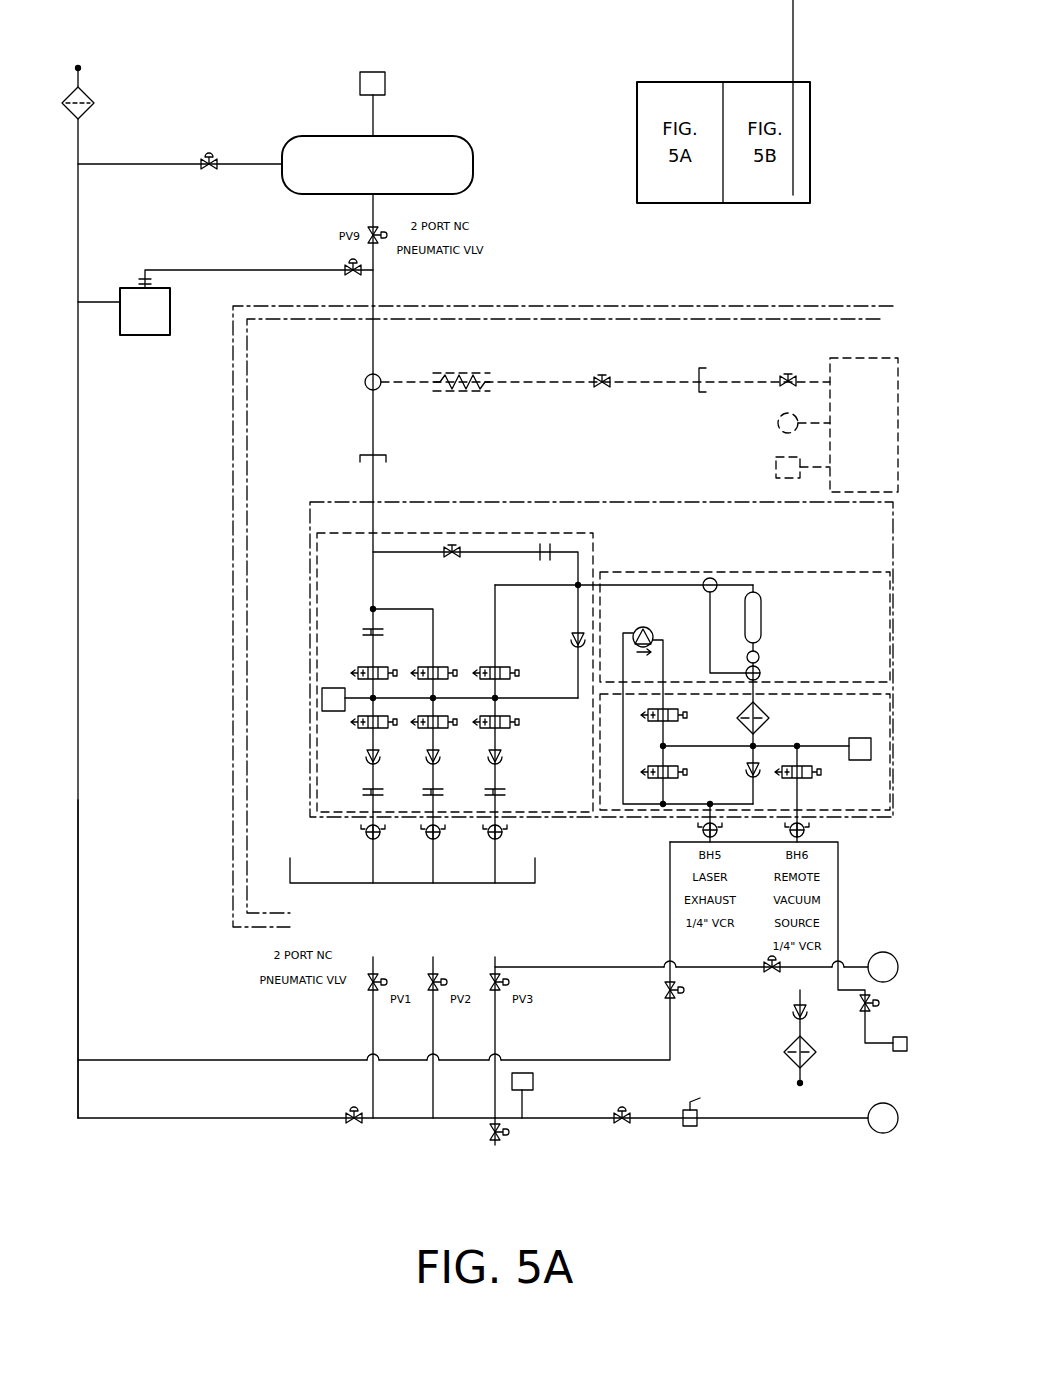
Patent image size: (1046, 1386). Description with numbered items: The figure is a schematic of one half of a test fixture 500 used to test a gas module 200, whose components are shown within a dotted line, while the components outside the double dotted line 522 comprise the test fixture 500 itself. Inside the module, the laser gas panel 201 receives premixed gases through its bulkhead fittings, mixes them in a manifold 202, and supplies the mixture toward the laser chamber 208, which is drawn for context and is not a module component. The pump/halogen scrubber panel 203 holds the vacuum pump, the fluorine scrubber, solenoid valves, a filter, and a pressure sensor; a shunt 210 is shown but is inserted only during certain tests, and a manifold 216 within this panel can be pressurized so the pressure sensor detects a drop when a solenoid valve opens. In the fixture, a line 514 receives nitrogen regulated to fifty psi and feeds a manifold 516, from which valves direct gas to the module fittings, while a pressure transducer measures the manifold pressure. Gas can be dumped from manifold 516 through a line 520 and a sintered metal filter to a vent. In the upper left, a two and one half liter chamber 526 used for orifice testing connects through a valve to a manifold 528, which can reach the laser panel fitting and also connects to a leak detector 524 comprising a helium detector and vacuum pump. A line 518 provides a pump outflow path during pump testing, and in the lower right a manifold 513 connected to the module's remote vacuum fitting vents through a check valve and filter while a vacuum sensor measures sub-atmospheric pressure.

The test fixture 500 is at (278, 1152).
The manifold 513 is at (848, 988).
The line 514 is at (650, 1118).
The manifold 516 is at (405, 1118).
The line 518 is at (175, 1060).
The line 520 is at (78, 929).
The double dotted line 522 is at (233, 583).
The leak detector 524 is at (123, 288).
The chamber 526 is at (473, 150).
The manifold 528 is at (373, 418).
The gas module 200 is at (310, 530).
The laser gas panel 201 is at (595, 538).
The manifold 202 is at (553, 700).
The pump/halogen scrubber panel 203 is at (870, 572).
The laser chamber 208 is at (835, 358).
The shunt 210 is at (705, 606).
The manifold 216 is at (783, 746).